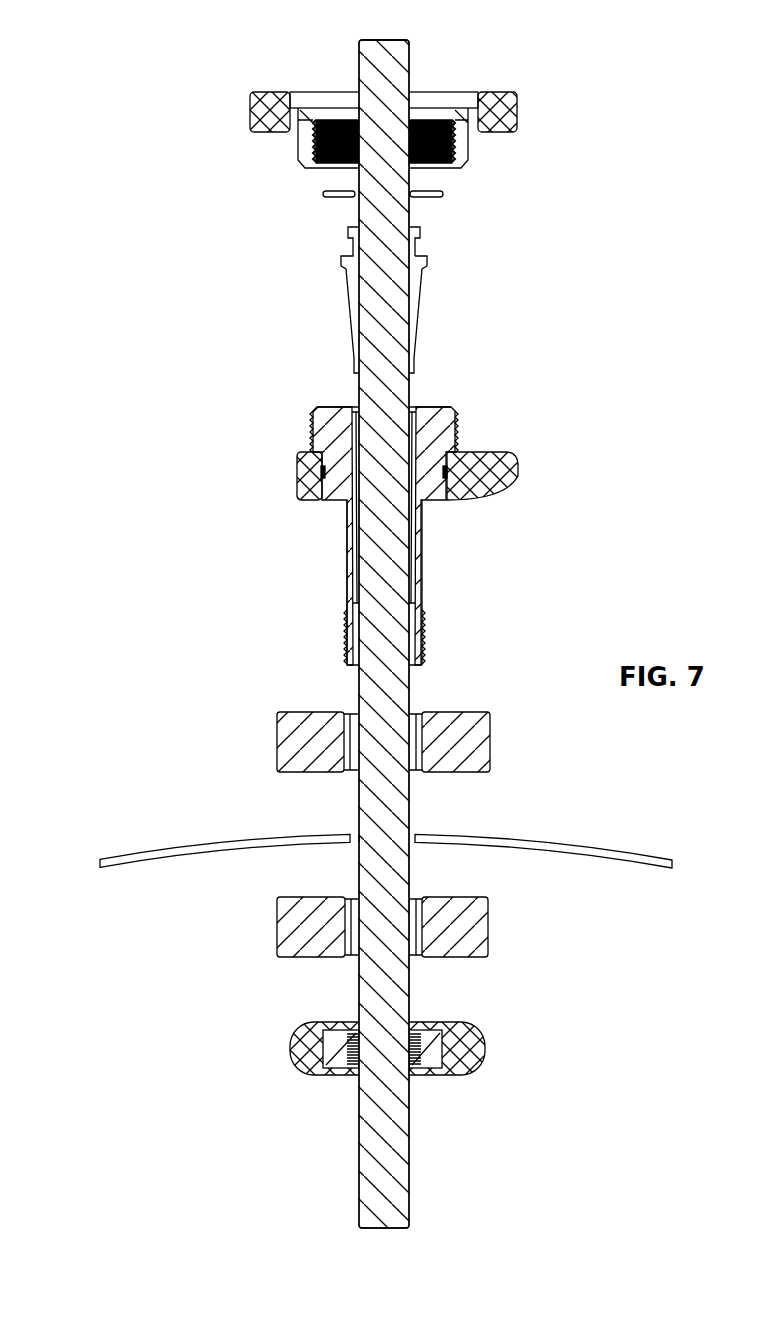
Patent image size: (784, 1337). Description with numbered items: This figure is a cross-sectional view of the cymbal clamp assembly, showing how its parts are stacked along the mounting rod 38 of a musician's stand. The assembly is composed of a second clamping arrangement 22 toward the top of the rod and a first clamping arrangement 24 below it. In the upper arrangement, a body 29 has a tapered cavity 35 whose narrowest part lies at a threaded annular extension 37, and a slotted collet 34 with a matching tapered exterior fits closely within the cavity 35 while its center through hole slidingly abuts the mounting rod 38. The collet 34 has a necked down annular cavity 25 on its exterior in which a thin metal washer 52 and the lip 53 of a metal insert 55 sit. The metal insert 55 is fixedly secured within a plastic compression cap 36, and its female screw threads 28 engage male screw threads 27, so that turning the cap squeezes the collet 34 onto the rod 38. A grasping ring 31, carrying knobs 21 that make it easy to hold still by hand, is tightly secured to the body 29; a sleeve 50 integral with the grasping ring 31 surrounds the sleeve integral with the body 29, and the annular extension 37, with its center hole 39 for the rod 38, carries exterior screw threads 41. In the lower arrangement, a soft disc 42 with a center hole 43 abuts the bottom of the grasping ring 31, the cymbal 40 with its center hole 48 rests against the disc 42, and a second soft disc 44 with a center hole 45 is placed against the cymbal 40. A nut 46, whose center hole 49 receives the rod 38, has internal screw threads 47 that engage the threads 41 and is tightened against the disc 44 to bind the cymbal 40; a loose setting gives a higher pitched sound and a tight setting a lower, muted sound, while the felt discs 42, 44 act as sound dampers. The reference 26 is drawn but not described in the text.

The knob 21 is at (512, 468).
The second clamping arrangement 22 is at (496, 81).
The first clamping arrangement 24 is at (477, 1102).
The necked down annular cavity 25 is at (417, 250).
The shaft upper end 26 is at (400, 100).
The male screw threads 27 is at (483, 418).
The female screw threads 28 is at (447, 163).
The body 29 is at (442, 412).
The grasping ring 31 is at (305, 470).
The slotted collet 34 is at (350, 228).
The cavity 35 is at (366, 444).
The plastic compression cap 36 is at (255, 108).
The annular extension 37 is at (421, 611).
The mounting rod 38 is at (359, 47).
The center hole 39 is at (337, 468).
The cymbal 40 is at (158, 857).
The exterior screw threads 41 is at (421, 660).
The soft disc 42 is at (290, 745).
The center hole 43 is at (405, 748).
The soft disc 44 is at (300, 928).
The center hole 45 is at (408, 918).
The nut 46 is at (313, 1050).
The internal screw threads 47 is at (303, 1025).
The center hole 48 is at (365, 835).
The center hole 49 is at (362, 1086).
The sleeve 50 is at (422, 553).
The thin metal washer 52 is at (327, 191).
The lip 53 is at (415, 103).
The metal insert 55 is at (472, 110).